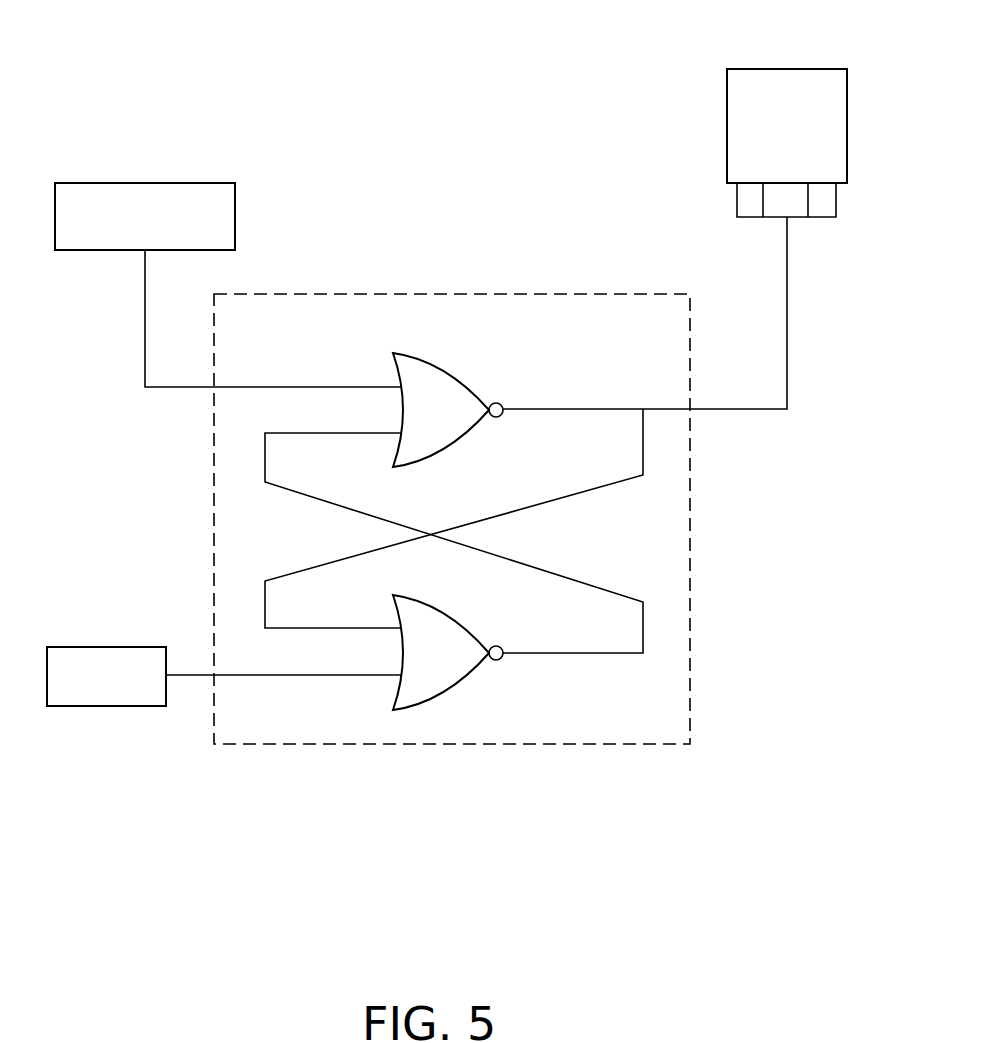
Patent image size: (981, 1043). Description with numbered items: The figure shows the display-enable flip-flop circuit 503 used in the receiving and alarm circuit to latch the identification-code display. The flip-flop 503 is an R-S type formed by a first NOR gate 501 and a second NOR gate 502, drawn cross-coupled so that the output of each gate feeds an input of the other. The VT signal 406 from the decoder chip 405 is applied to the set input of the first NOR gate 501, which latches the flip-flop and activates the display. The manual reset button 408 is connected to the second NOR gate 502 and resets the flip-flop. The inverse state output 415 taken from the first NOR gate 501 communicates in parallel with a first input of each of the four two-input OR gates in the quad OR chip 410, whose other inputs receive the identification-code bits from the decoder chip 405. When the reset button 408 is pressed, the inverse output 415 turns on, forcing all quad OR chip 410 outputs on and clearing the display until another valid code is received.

The decoder chip 405 is at (145, 183).
The VT signal 406 is at (145, 335).
The reset button 408 is at (87, 647).
The quad OR chip 410 is at (790, 69).
The inverse state output 415 is at (788, 337).
The first NOR gate 501 is at (445, 392).
The second NOR gate 502 is at (445, 667).
The display-enable flip-flop 503 is at (682, 766).